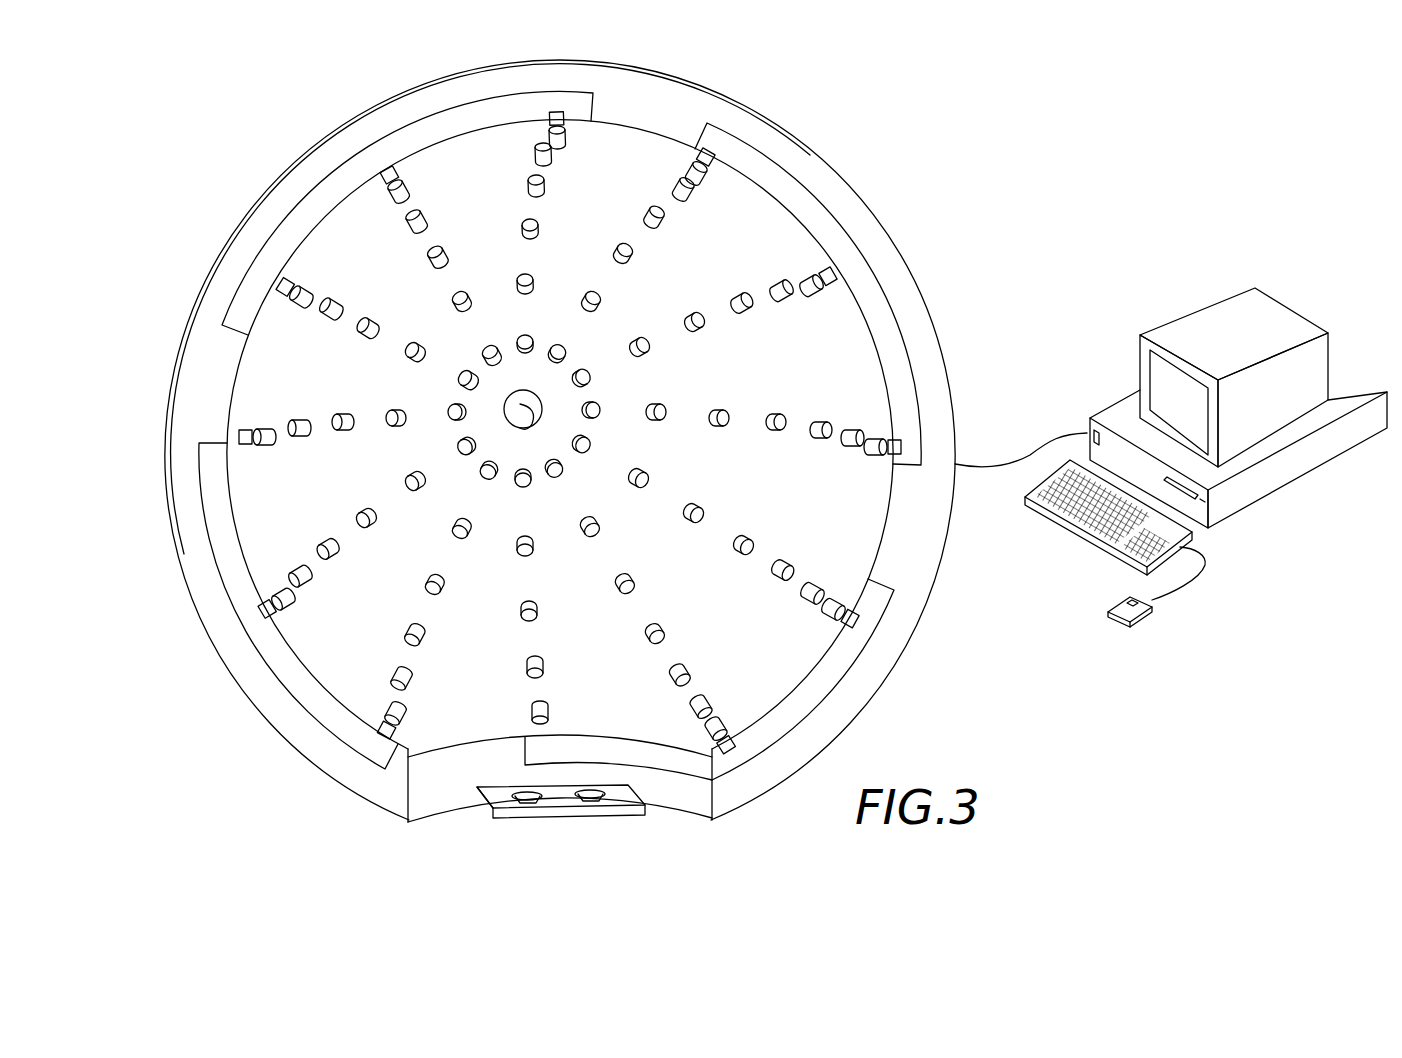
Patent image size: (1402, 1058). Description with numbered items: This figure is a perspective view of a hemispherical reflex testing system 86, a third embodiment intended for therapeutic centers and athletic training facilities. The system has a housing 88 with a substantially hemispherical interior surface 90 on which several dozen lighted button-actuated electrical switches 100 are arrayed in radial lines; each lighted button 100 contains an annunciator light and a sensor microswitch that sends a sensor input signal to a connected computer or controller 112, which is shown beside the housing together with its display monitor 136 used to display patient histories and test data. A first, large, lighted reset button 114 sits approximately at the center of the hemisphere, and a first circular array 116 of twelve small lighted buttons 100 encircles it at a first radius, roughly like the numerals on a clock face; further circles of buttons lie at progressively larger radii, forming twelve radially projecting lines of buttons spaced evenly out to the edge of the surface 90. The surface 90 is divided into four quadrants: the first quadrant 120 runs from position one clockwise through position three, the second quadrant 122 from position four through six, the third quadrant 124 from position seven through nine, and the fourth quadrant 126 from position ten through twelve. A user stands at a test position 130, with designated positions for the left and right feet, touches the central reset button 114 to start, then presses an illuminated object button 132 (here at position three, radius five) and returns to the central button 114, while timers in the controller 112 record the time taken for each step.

The hemispherical reflex testing system 86 is at (560, 455).
The housing 88 is at (800, 163).
The hemispherical interior surface 90 is at (347, 238).
The lighted button-actuated electrical switches 100 is at (570, 433).
The computer or controller 112 is at (1171, 406).
The central lighted reset button 114 is at (527, 425).
The first circular array 116 is at (590, 355).
The first quadrant 120 is at (875, 272).
The second quadrant 122 is at (880, 613).
The third quadrant 124 is at (238, 637).
The fourth quadrant 126 is at (283, 228).
The test position 130 is at (487, 803).
The object button 132 is at (778, 416).
The display monitor 136 is at (1163, 383).